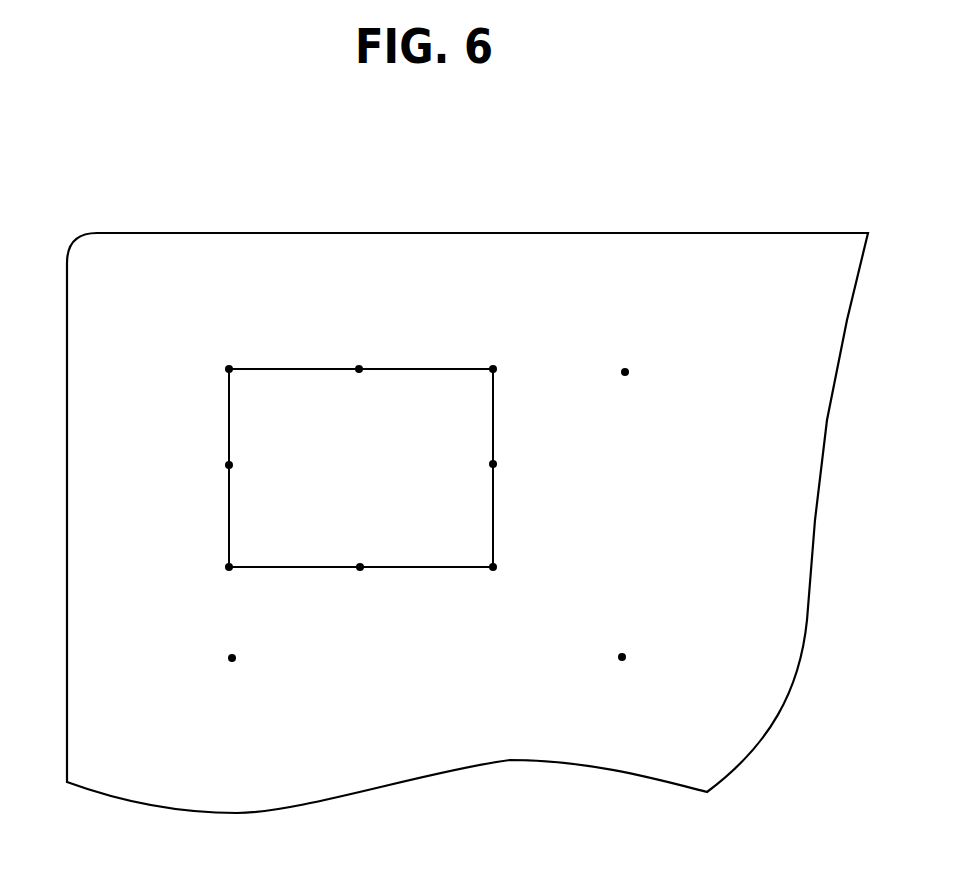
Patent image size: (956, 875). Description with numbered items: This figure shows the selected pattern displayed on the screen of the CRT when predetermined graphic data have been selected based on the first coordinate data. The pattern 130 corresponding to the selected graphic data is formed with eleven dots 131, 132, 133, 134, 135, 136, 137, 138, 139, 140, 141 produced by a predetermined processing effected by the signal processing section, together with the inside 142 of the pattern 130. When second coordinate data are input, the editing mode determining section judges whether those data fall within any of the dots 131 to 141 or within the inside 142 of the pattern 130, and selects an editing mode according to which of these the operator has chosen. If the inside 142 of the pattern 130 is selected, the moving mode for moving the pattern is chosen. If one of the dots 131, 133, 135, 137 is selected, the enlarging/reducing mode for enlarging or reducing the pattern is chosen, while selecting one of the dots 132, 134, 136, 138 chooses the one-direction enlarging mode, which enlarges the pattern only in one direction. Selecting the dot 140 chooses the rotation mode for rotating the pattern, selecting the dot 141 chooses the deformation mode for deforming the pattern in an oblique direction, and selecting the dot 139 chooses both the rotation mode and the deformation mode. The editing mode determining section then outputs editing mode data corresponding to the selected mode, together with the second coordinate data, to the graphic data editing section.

The pattern 130 is at (448, 360).
The dot 131 is at (229, 369).
The dot 132 is at (359, 369).
The dot 133 is at (493, 369).
The dot 134 is at (493, 464).
The dot 135 is at (493, 567).
The dot 136 is at (360, 567).
The dot 137 is at (229, 567).
The dot 138 is at (229, 465).
The dot 139 is at (625, 372).
The dot 140 is at (621, 662).
The dot 141 is at (232, 663).
The inside of the pattern 142 is at (442, 545).